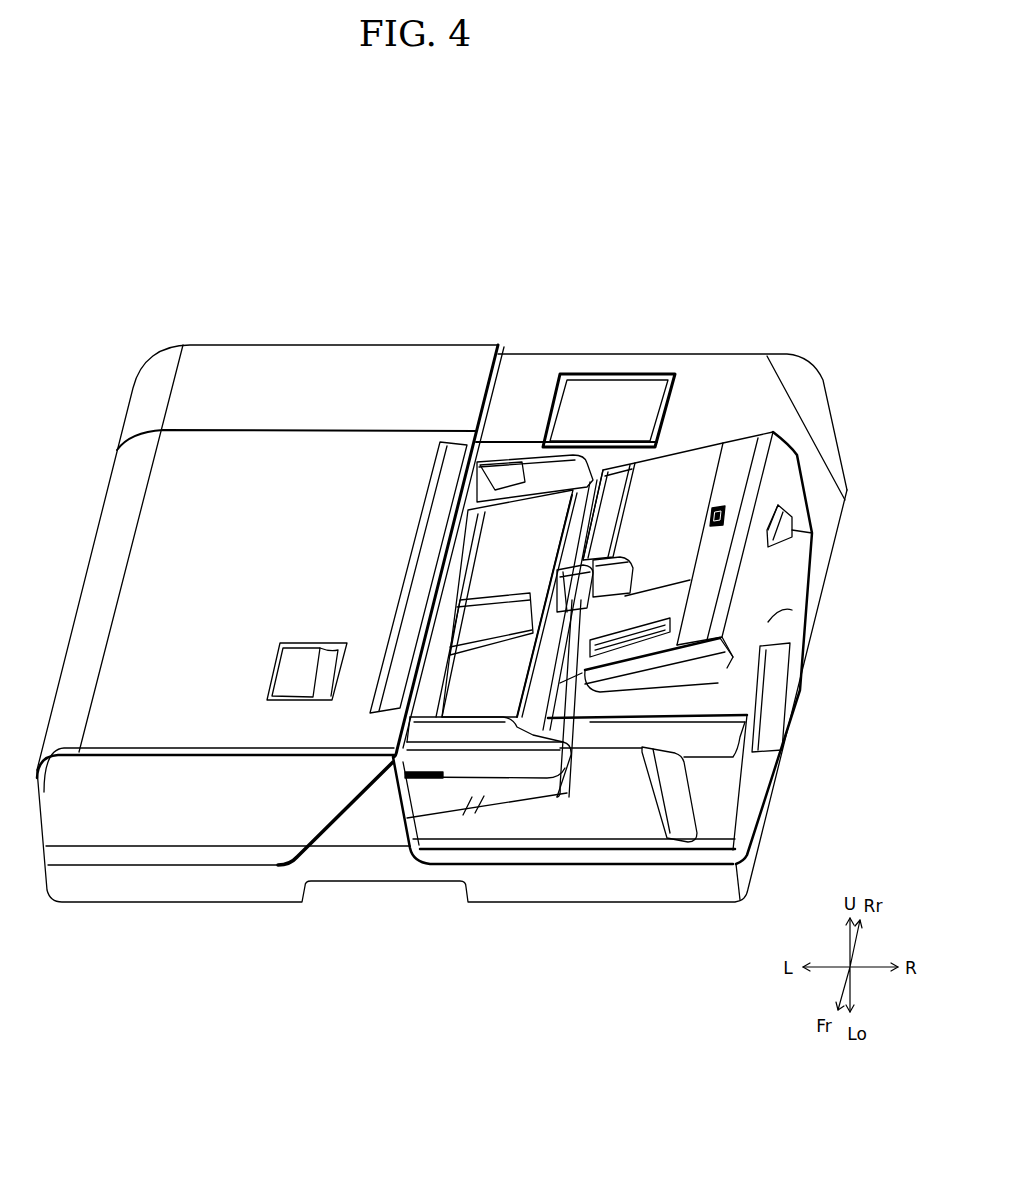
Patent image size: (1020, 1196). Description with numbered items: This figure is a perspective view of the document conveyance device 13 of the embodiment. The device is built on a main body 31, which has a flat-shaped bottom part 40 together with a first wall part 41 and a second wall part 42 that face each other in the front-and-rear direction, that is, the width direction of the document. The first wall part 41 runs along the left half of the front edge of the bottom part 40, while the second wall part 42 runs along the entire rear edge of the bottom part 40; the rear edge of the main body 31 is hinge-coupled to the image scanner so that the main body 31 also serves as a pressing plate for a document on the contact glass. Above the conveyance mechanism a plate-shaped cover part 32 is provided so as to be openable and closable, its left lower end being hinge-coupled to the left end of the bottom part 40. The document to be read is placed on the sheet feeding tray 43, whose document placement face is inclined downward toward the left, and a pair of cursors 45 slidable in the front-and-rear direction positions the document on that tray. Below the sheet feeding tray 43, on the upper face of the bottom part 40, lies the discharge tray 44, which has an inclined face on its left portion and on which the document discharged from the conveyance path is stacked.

The document conveyance device 13 is at (122, 252).
The main body 31 is at (385, 905).
The cover part 32 is at (98, 522).
The bottom part 40 is at (215, 903).
The first wall part 41 is at (372, 825).
The second wall part 42 is at (665, 353).
The sheet feeding tray 43 is at (737, 430).
The discharge tray 44 is at (772, 620).
The cursors 45 is at (517, 458).